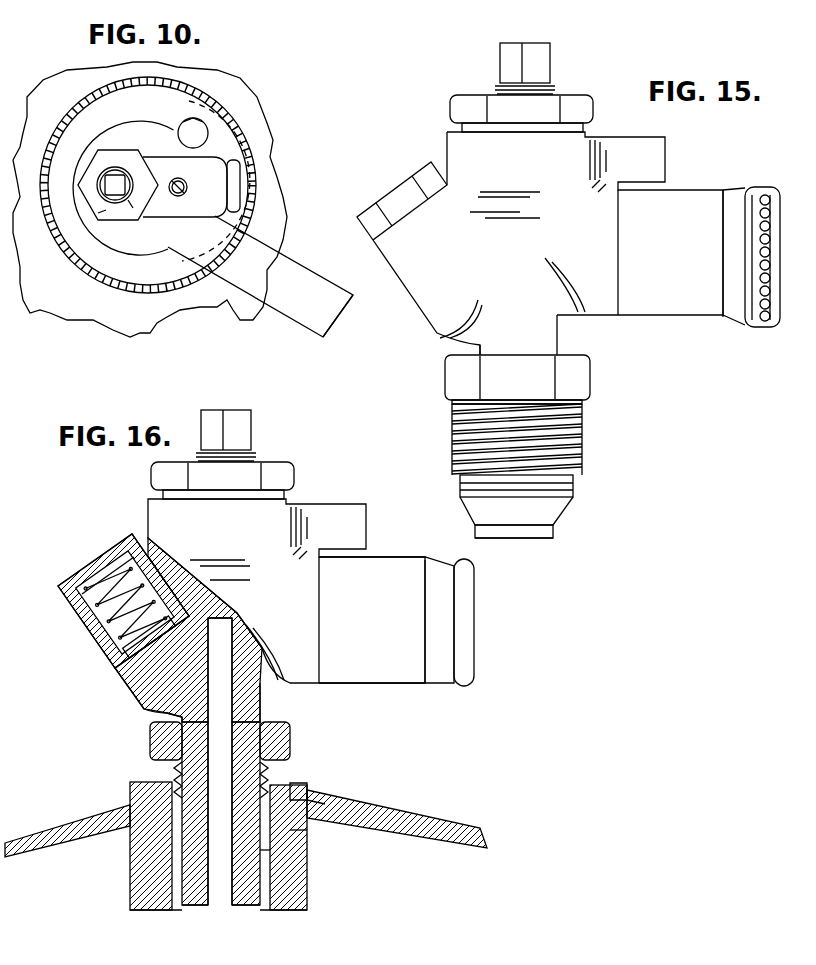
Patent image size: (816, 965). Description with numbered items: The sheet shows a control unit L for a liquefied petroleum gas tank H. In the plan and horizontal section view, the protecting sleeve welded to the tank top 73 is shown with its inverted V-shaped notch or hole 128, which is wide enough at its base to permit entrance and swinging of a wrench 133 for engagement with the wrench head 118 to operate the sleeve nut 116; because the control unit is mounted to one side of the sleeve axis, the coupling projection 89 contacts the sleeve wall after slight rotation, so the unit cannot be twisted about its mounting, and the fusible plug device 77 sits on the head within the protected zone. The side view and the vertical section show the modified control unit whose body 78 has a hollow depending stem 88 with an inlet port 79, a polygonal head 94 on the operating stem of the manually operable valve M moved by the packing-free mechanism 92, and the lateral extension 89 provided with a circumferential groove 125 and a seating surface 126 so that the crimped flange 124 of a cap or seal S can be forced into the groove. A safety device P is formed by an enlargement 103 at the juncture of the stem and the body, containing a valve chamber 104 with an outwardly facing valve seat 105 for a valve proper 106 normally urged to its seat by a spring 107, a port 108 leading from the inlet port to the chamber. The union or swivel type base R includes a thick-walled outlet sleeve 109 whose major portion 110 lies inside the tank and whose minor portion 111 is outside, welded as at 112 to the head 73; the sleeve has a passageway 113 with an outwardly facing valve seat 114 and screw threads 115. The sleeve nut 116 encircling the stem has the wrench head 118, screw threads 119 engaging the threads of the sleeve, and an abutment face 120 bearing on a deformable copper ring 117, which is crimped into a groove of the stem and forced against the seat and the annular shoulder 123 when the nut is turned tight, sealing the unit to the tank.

In FIG. 10, the top 73 is at (268, 162).
In FIG. 16, the top 73 is at (427, 824).
In FIG. 10, the fusible plug device 77 is at (203, 125).
In FIG. 15, the body 78 is at (540, 244).
In FIG. 16, the body 78 is at (312, 684).
In FIG. 16, the inlet port 79 is at (212, 905).
In FIG. 15, the stem 88 is at (560, 345).
In FIG. 16, the stem 88 is at (262, 716).
In FIG. 10, the coupling projection 89 is at (190, 220).
In FIG. 15, the coupling projection 89 is at (680, 316).
In FIG. 16, the coupling projection 89 is at (387, 686).
In FIG. 10, the mechanism 92 is at (127, 212).
In FIG. 15, the mechanism 92 is at (580, 110).
In FIG. 16, the mechanism 92 is at (296, 471).
In FIG. 10, the polygonal head 94 is at (105, 172).
In FIG. 15, the polygonal head 94 is at (552, 62).
In FIG. 16, the polygonal head 94 is at (252, 432).
In FIG. 15, the enlargement 103 is at (432, 306).
In FIG. 16, the enlargement 103 is at (103, 662).
In FIG. 16, the valve chamber 104 is at (100, 636).
In FIG. 16, the valve seat 105 is at (160, 708).
In FIG. 16, the valve proper 106 is at (130, 700).
In FIG. 16, the spring 107 is at (100, 580).
In FIG. 16, the port 108 is at (180, 728).
In FIG. 16, the outlet sleeve 109 is at (300, 836).
In FIG. 16, the major portion 110 is at (307, 877).
In FIG. 16, the minor portion 111 is at (308, 786).
In FIG. 16, the weld 112 is at (130, 793).
In FIG. 16, the passageway 113 is at (180, 913).
In FIG. 16, the valve seat 114 is at (150, 858).
In FIG. 16, the screw threads 115 is at (318, 803).
In FIG. 15, the sleeve nut 116 is at (460, 403).
In FIG. 16, the sleeve nut 116 is at (168, 772).
In FIG. 15, the ring 117 is at (560, 504).
In FIG. 16, the ring 117 is at (273, 857).
In FIG. 15, the wrench head 118 is at (455, 370).
In FIG. 16, the wrench head 118 is at (293, 747).
In FIG. 15, the screw threads 119 is at (590, 432).
In FIG. 15, the abutment face 120 is at (477, 488).
In FIG. 15, the annular shoulder 123 is at (524, 522).
In FIG. 15, the crimped flange 124 is at (748, 186).
In FIG. 16, the circumferential groove 125 is at (448, 680).
In FIG. 16, the seating surface 126 is at (488, 668).
In FIG. 10, the notch or hole 128 is at (215, 258).
In FIG. 10, the wrench 133 is at (296, 318).
In FIG. 10, the safety device P is at (222, 140).
In FIG. 15, the safety device P is at (358, 245).
In FIG. 16, the safety device P is at (100, 665).
In FIG. 10, the control unit L is at (80, 208).
In FIG. 15, the control unit L is at (565, 316).
In FIG. 16, the control unit L is at (250, 686).
In FIG. 10, the manually operable valve M is at (80, 266).
In FIG. 15, the manually operable valve M is at (460, 126).
In FIG. 16, the manually operable valve M is at (286, 496).
In FIG. 15, the union or swivel type base R is at (578, 405).
In FIG. 16, the union or swivel type base R is at (272, 770).
In FIG. 15, the cap or seal S is at (748, 330).
In FIG. 16, the tank H is at (485, 848).